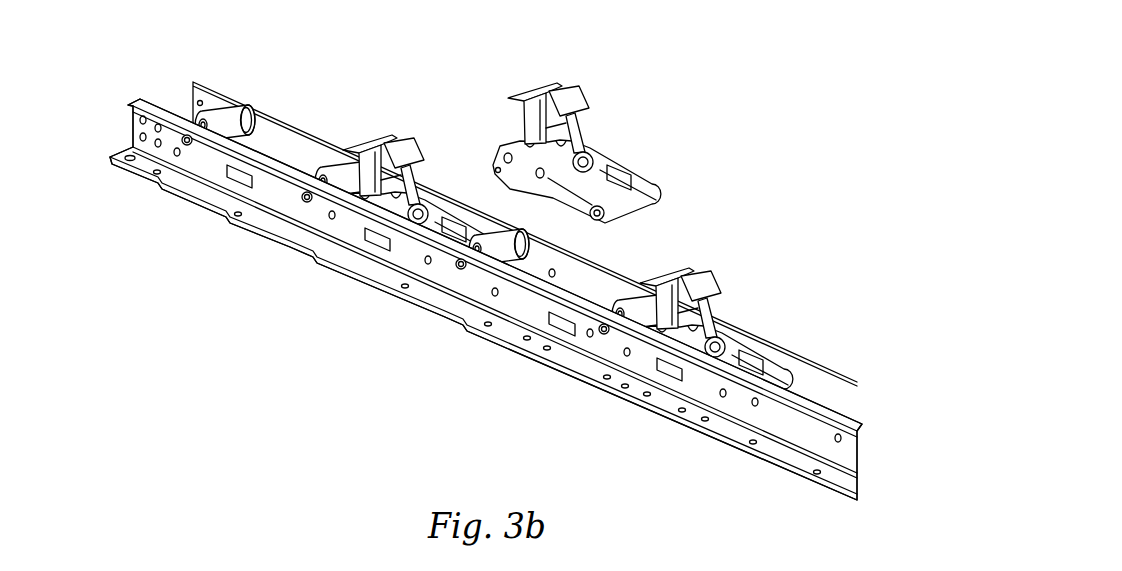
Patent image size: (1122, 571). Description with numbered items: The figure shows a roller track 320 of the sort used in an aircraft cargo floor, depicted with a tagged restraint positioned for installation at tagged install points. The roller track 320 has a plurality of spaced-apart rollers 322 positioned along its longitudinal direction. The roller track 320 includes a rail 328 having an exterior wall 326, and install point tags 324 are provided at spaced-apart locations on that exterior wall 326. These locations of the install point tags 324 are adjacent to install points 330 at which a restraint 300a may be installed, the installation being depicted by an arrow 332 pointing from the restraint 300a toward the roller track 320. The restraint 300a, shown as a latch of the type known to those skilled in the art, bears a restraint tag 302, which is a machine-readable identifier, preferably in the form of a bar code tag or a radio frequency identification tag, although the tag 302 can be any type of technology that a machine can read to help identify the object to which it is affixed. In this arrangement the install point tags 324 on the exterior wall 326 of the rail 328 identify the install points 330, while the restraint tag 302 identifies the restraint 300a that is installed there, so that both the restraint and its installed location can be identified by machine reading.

The restraint 300a is at (590, 153).
The restraint tag 302 is at (623, 180).
The roller track 320 is at (486, 251).
The rollers 322 is at (225, 114).
The install point tags 324 is at (239, 189).
The exterior wall 326 is at (468, 290).
The rail 328 is at (152, 104).
The install points 330 is at (281, 148).
The arrow 332 is at (592, 294).